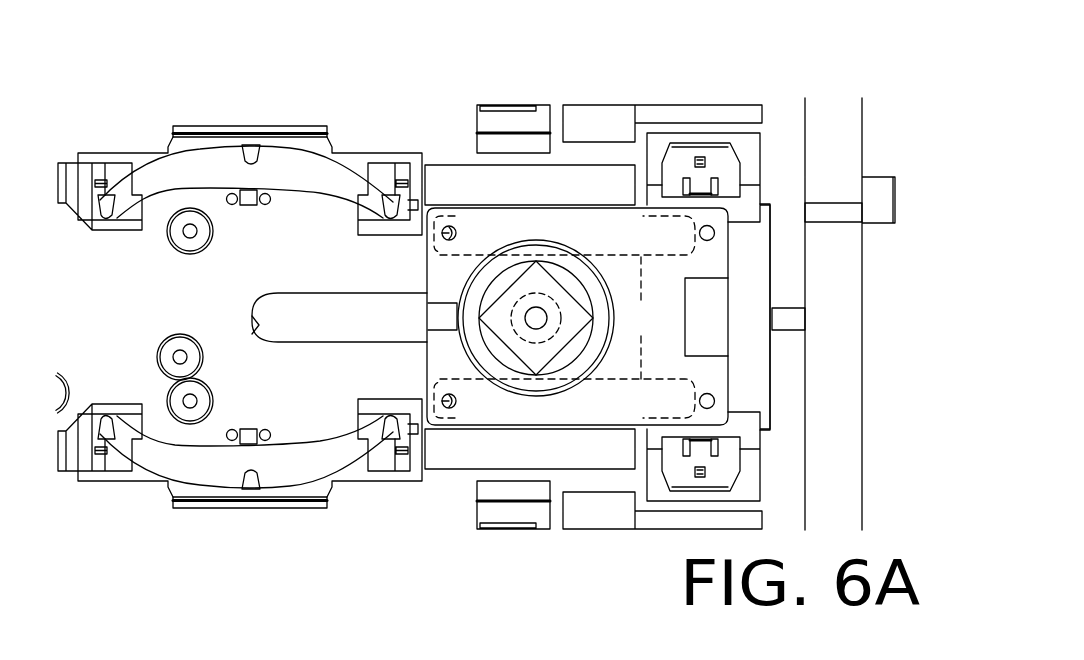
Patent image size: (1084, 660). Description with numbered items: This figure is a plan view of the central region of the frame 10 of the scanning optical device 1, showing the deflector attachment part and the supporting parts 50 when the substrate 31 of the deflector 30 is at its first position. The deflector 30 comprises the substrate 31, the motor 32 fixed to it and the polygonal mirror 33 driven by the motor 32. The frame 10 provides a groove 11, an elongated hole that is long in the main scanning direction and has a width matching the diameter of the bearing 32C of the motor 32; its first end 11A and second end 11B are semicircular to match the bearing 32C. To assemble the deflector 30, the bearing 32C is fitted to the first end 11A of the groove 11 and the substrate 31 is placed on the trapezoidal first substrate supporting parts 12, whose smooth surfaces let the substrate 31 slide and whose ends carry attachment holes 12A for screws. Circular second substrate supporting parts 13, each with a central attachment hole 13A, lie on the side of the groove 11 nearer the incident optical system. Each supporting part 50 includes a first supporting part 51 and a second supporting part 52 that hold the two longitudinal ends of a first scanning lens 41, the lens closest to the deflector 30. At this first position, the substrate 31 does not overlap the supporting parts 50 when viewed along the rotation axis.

The scanning optical device 1 is at (540, 73).
The frame 10 is at (863, 139).
The groove 11 is at (364, 298).
The first end 11A is at (574, 355).
The second end 11B is at (256, 326).
The first substrate supporting part 12 is at (564, 317).
The attachment hole 12A is at (452, 226).
The second substrate supporting part 13 is at (199, 244).
The attachment hole 13A is at (186, 235).
The deflector 30 is at (735, 347).
The substrate 31 is at (712, 257).
The motor 32 is at (563, 244).
The bearing 32C is at (498, 331).
The polygonal mirror 33 is at (525, 282).
The first scanning lens 41 is at (264, 167).
The supporting part 50 is at (352, 56).
The first supporting part 51 is at (378, 153).
The second supporting part 52 is at (122, 153).